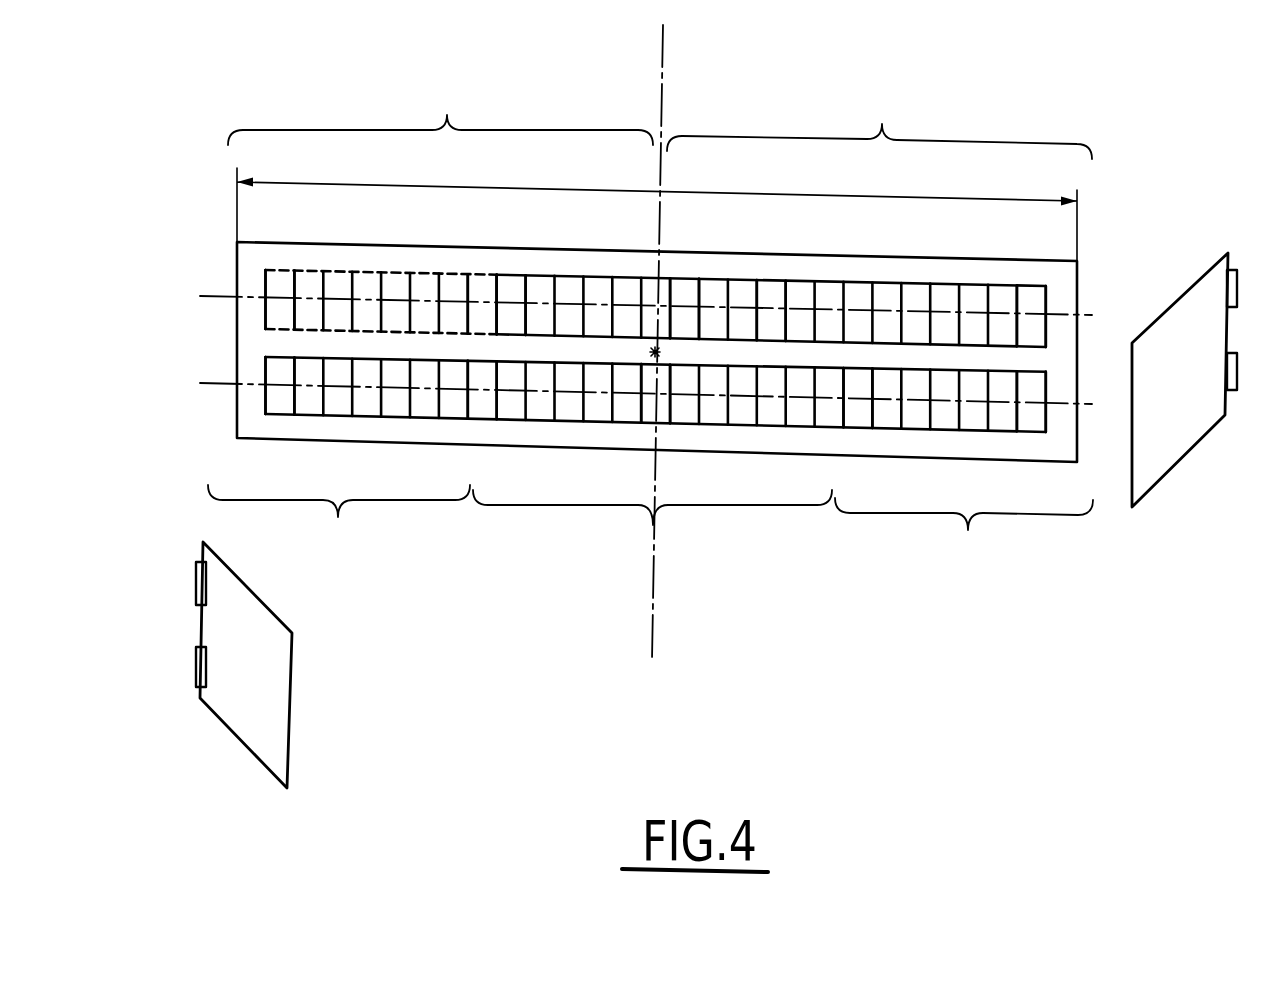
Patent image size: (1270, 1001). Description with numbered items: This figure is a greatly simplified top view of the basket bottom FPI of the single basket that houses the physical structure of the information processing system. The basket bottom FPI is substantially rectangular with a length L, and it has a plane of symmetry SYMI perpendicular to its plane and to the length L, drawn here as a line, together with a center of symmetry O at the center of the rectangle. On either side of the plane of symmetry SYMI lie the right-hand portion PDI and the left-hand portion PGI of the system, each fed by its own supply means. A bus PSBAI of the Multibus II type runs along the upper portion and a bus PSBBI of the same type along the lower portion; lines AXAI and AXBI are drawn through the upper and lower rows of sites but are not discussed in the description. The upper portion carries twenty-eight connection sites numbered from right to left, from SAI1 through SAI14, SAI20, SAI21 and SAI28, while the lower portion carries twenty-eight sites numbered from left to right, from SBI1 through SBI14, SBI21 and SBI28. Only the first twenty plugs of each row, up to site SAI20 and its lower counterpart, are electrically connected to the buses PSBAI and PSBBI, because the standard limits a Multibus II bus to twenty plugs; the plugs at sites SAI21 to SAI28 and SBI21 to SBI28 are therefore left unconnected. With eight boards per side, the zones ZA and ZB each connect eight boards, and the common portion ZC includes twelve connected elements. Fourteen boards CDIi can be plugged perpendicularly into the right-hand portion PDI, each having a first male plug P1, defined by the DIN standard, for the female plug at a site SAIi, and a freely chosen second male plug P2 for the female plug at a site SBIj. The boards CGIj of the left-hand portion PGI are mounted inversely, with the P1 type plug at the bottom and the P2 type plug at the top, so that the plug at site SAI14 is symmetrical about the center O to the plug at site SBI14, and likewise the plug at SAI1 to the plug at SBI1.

The plane of symmetry SYMI is at (664, 53).
The left-hand portion PGI is at (440, 113).
The right-hand portion PDI is at (879, 125).
The length L is at (657, 207).
The basket bottom FPI is at (1079, 261).
The bus PSBAI is at (832, 268).
The bus PSBBI is at (265, 414).
The upper connector row axis AXAI is at (216, 297).
The lower connector row axis AXBI is at (214, 385).
The center of symmetry O is at (659, 352).
The connection site SAI28 is at (282, 270).
The connection site SAI21 is at (472, 274).
The connection site SAI20 is at (503, 276).
The connection site SAI14 is at (674, 282).
The connection site SAIi is at (780, 283).
The connection site SAI1 is at (1042, 288).
The connection site SBI1 is at (265, 358).
The connection site SBIj is at (494, 414).
The connection site SBI14 is at (639, 421).
The connection site SBI21 is at (837, 420).
The connection site SBI28 is at (1048, 378).
The zone ZB is at (339, 519).
The common portion ZC is at (652, 524).
The zone ZA is at (964, 533).
The board CGIj is at (292, 672).
The board CDIi is at (1170, 472).
The first male plug P1 is at (733, 485).
The second male plug P2 is at (733, 486).